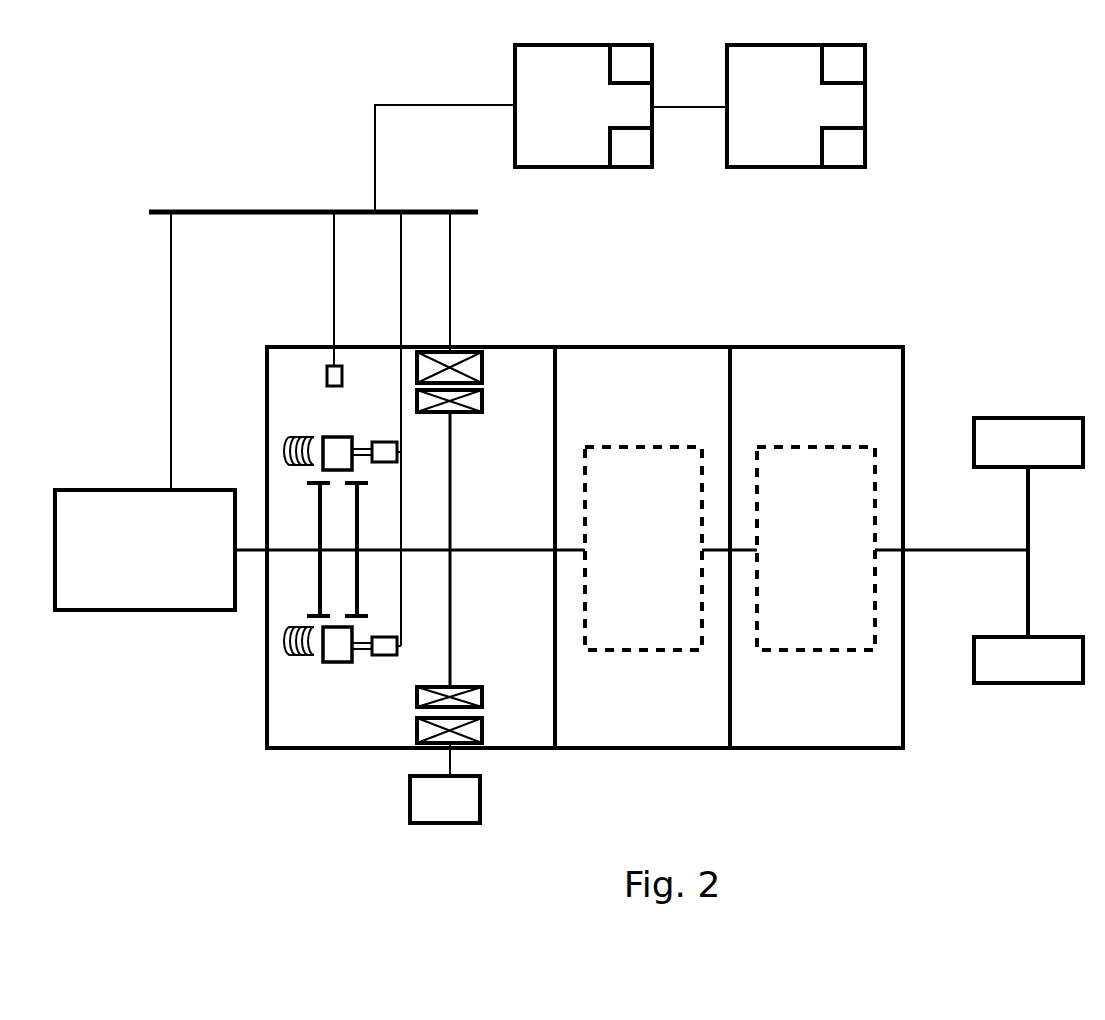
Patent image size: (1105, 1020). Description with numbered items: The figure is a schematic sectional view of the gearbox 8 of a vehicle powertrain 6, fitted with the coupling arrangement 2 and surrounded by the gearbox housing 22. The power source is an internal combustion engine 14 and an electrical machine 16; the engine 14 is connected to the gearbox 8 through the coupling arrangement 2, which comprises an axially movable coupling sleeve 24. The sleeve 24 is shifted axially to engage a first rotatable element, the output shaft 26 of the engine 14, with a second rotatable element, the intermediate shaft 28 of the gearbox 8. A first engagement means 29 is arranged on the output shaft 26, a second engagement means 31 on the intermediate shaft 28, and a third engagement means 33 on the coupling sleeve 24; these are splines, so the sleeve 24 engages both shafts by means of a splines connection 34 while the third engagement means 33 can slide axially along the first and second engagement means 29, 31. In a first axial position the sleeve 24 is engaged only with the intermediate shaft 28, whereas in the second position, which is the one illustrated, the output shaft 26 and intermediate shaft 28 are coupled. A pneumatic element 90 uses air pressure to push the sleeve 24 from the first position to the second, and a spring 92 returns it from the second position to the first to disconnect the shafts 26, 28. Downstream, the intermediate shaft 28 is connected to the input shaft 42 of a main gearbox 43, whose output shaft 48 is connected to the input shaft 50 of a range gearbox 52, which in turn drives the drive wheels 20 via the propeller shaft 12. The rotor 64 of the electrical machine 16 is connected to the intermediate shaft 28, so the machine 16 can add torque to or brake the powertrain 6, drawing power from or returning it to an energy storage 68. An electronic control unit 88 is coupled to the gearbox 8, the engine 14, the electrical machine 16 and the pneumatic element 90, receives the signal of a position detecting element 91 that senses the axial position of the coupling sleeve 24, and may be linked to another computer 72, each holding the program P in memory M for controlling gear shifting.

The coupling arrangement 2 is at (280, 408).
The powertrain 6 is at (190, 765).
The gearbox 8 is at (722, 778).
The propeller shaft 12 is at (968, 550).
The internal combustion engine 14 is at (143, 612).
The electrical machine 16 is at (383, 368).
The drive wheels 20 is at (1040, 685).
The gearbox housing 22 is at (775, 347).
The coupling sleeve 24 is at (332, 437).
The output shaft 26 is at (287, 553).
The intermediate shaft 28 is at (438, 553).
The first engagement means 29 is at (293, 483).
The second engagement means 31 is at (360, 472).
The third engagement means 33 is at (340, 472).
The splines connection 34 is at (400, 470).
The input shaft 42 is at (572, 547).
The main gearbox 43 is at (623, 447).
The output shaft 48 is at (715, 555).
The input shaft 50 is at (743, 547).
The range gearbox 52 is at (808, 447).
The rotor 64 is at (487, 403).
The energy storage 68 is at (482, 805).
The computer 72 is at (865, 107).
The electronic control unit 88 is at (515, 92).
The pneumatic element 90 is at (385, 660).
The position detecting element 91 is at (327, 366).
The spring 92 is at (290, 657).